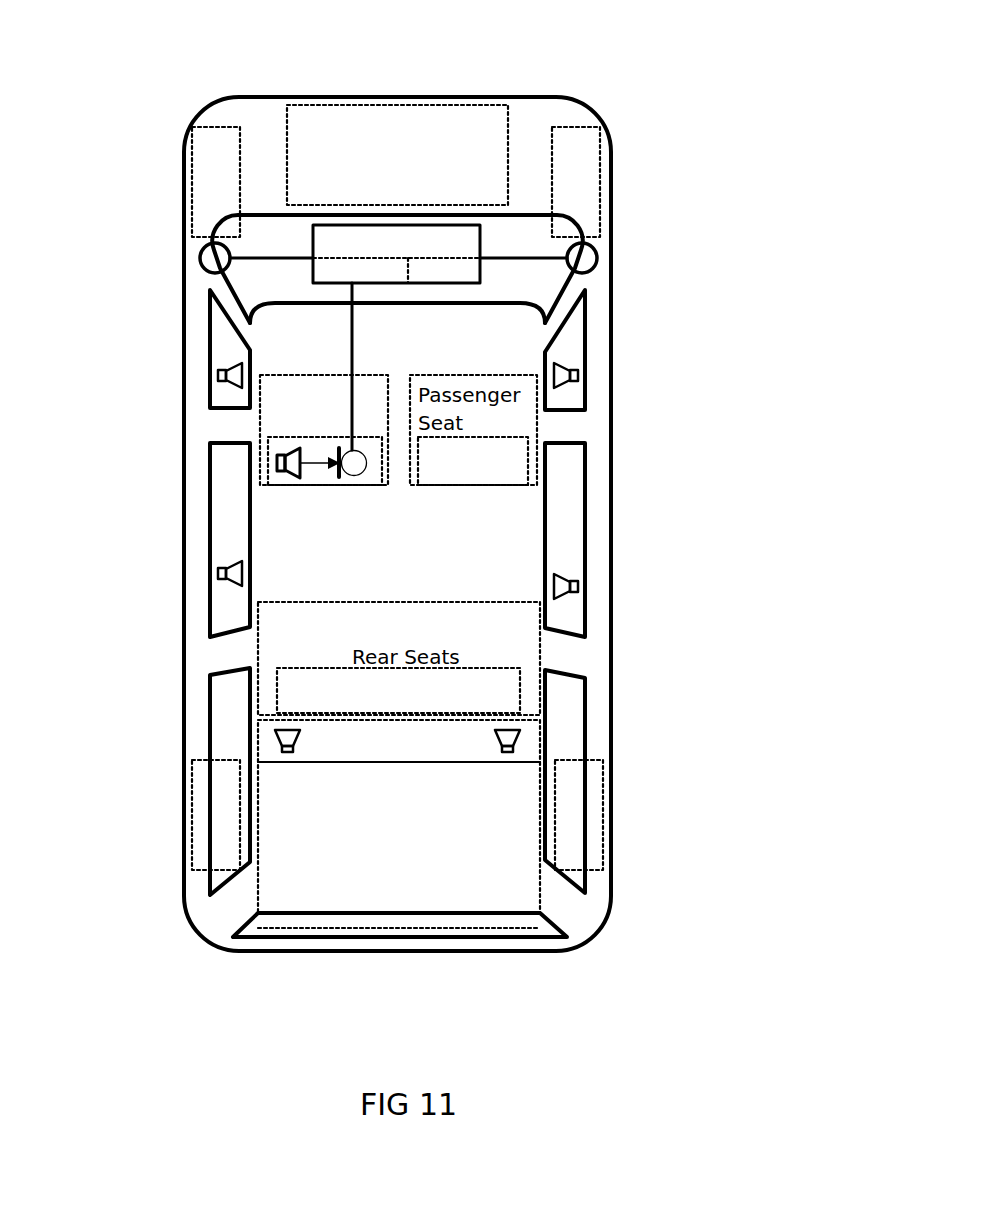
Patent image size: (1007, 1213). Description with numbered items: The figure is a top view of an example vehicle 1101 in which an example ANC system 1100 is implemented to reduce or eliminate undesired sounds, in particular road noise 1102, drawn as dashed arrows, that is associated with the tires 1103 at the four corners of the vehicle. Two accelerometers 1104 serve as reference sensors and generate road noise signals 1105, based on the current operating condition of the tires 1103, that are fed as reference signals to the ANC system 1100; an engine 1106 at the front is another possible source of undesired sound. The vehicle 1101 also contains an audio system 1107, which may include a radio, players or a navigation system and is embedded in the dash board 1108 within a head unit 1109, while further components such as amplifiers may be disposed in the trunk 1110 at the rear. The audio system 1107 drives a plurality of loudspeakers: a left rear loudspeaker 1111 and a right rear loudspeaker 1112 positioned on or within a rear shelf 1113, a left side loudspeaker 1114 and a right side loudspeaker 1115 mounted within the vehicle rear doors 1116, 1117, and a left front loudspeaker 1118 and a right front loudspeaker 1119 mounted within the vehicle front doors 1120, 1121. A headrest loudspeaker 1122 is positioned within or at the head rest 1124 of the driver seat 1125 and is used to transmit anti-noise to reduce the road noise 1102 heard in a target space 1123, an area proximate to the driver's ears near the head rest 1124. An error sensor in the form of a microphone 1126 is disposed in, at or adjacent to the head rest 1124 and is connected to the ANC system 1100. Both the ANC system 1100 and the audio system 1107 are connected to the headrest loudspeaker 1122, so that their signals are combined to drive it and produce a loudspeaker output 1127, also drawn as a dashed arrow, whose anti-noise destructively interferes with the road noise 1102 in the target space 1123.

The ANC system 1100 is at (480, 268).
The vehicle 1101 is at (654, 40).
The road noise 1102 is at (217, 190).
The tires 1103 is at (205, 140).
The accelerometers 1104 is at (203, 262).
The road noise signals 1105 is at (307, 255).
The engine 1106 is at (400, 120).
The audio system 1107 is at (318, 265).
The dash board 1108 is at (313, 299).
The head unit 1109 is at (340, 226).
The trunk 1110 is at (388, 903).
The left rear loudspeaker 1111 is at (290, 754).
The right rear loudspeaker 1112 is at (509, 754).
The rear shelf 1113 is at (470, 754).
The left side loudspeaker 1114 is at (215, 570).
The right side loudspeaker 1115 is at (565, 597).
The vehicle rear door 1116 is at (188, 595).
The vehicle rear door 1117 is at (608, 580).
The left front loudspeaker 1118 is at (215, 370).
The right front loudspeaker 1119 is at (565, 385).
The vehicle front door 1120 is at (188, 387).
The vehicle front door 1121 is at (608, 365).
The headrest loudspeaker 1122 is at (283, 455).
The target space 1123 is at (328, 412).
The head rest 1124 is at (322, 470).
The driver seat 1125 is at (387, 486).
The microphone 1126 is at (360, 475).
The loudspeaker output 1127 is at (308, 470).